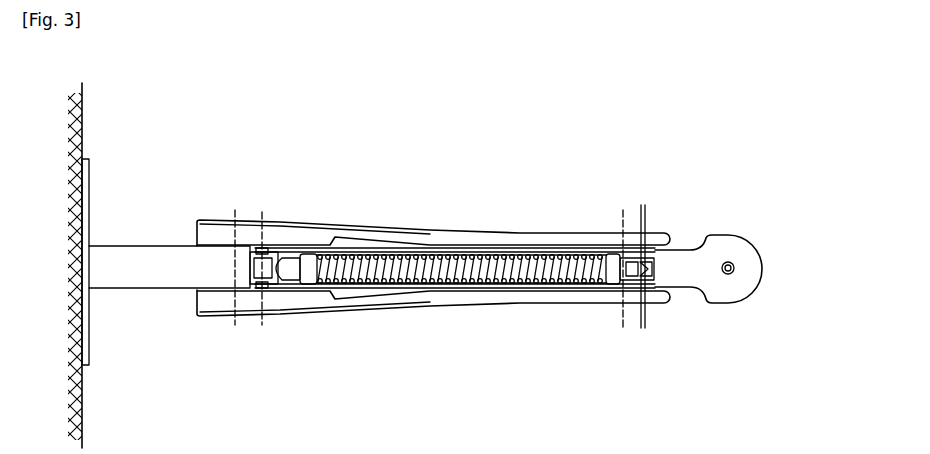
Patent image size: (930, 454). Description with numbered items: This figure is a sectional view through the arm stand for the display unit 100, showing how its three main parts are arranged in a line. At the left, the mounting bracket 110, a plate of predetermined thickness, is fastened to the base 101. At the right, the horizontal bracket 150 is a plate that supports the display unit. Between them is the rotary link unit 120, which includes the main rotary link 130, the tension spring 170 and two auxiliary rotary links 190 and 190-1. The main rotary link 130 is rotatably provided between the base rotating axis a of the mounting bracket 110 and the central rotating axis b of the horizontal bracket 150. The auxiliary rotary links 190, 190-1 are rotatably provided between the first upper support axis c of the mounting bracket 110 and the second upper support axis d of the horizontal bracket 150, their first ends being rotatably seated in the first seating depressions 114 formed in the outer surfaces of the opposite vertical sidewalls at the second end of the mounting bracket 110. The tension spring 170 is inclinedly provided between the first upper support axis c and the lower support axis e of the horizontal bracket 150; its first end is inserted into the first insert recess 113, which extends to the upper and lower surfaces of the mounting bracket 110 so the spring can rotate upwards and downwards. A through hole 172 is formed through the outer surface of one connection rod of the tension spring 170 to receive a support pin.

The arm stand for the display unit 100 is at (434, 150).
The base 101 is at (89, 350).
The mounting bracket 110 is at (140, 262).
The first insert recess 113 is at (259, 252).
The first seating depression 114 is at (270, 247).
The rotary link unit 120 is at (468, 305).
The main rotary link 130 is at (345, 220).
The horizontal bracket 150 is at (722, 250).
The tension spring 170 is at (500, 238).
The through hole 172 is at (603, 247).
The auxiliary rotary link 190 is at (390, 290).
The auxiliary rotary link 190-1 is at (378, 247).
The base rotating axis a is at (236, 320).
The central rotating axis b is at (623, 320).
The first upper support axis c is at (262, 217).
The second upper support axis d is at (642, 212).
The lower support axis e is at (643, 323).